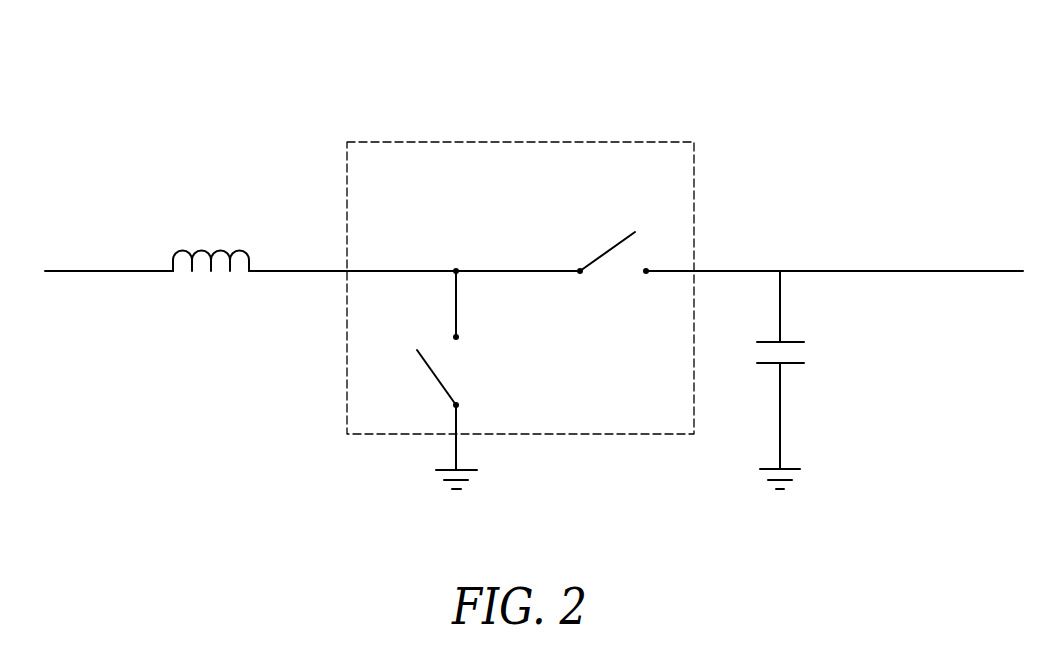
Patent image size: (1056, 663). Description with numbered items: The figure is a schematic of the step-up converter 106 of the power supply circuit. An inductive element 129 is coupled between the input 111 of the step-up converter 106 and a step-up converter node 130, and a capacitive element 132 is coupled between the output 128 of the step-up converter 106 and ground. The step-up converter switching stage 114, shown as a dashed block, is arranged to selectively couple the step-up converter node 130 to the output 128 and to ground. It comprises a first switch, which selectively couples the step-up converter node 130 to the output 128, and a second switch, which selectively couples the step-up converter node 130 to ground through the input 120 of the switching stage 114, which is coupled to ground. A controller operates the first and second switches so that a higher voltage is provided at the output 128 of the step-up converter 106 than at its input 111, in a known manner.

The step-up converter 106 is at (864, 65).
The input of the step-up converter 111 is at (74, 271).
The step-up converter switching stage 114 is at (608, 218).
The input 120 is at (456, 442).
The output of the step-up converter 128 is at (880, 271).
The inductive element 129 is at (214, 247).
The step-up converter node 130 is at (456, 271).
The capacitive element 132 is at (823, 355).